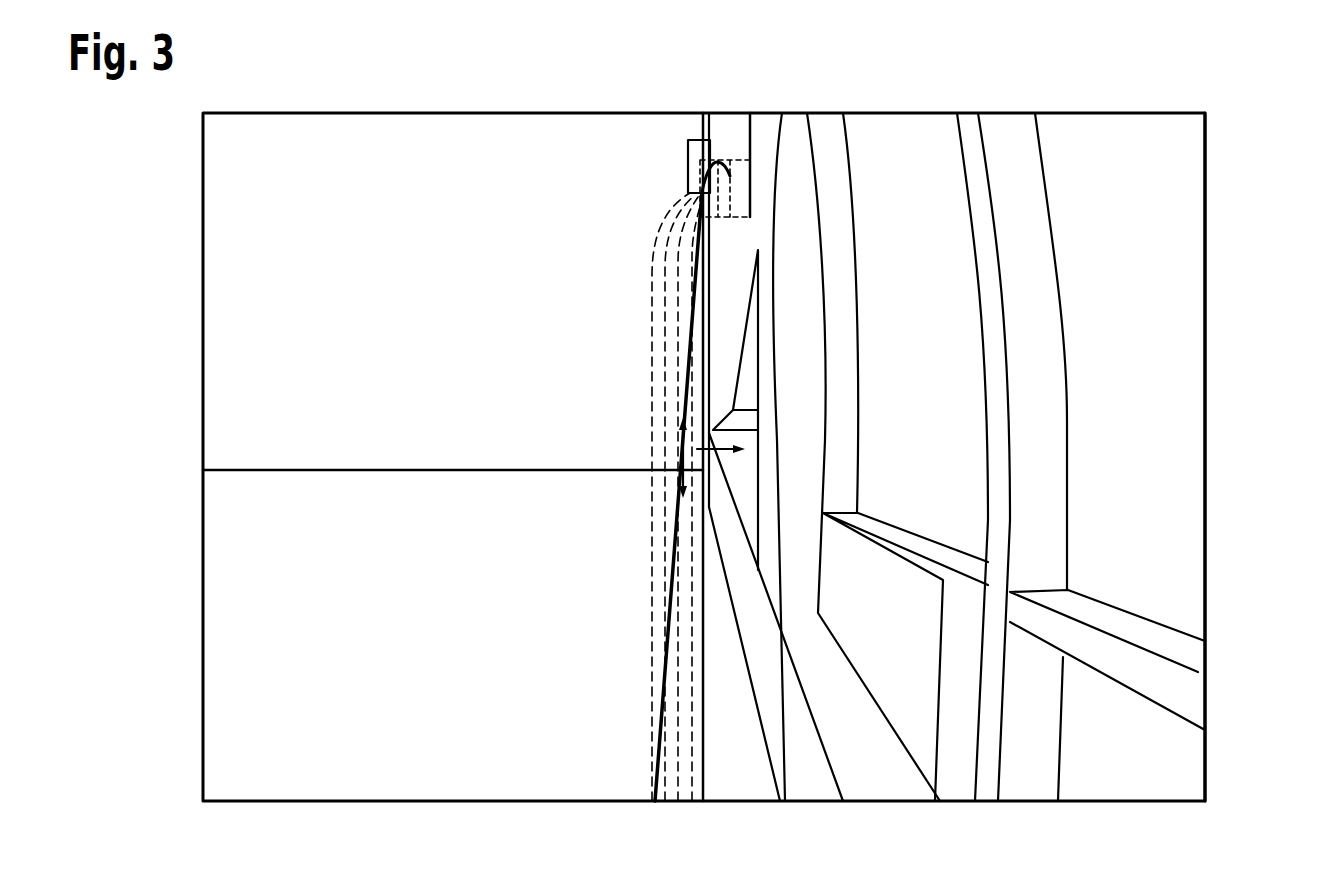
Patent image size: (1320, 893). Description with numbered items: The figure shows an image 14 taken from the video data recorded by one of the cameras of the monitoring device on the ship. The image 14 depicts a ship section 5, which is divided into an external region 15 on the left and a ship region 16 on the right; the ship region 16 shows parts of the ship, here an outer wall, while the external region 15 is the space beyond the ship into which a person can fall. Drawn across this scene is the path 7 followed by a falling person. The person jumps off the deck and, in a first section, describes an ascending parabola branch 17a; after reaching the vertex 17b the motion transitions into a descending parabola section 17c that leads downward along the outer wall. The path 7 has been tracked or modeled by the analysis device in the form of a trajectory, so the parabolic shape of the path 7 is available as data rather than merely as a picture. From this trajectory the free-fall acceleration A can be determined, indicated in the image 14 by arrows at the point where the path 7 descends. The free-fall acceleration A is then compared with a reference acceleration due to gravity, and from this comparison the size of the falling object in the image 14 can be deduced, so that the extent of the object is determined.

The ship section 5 is at (245, 182).
The path 7 is at (685, 328).
The image 14 is at (1205, 327).
The external region 15 is at (440, 400).
The ship region 16 is at (934, 398).
The ascending parabola branch 17a is at (720, 162).
The vertex 17b is at (730, 176).
The descending parabola section 17c is at (687, 275).
The free-fall acceleration A is at (682, 450).